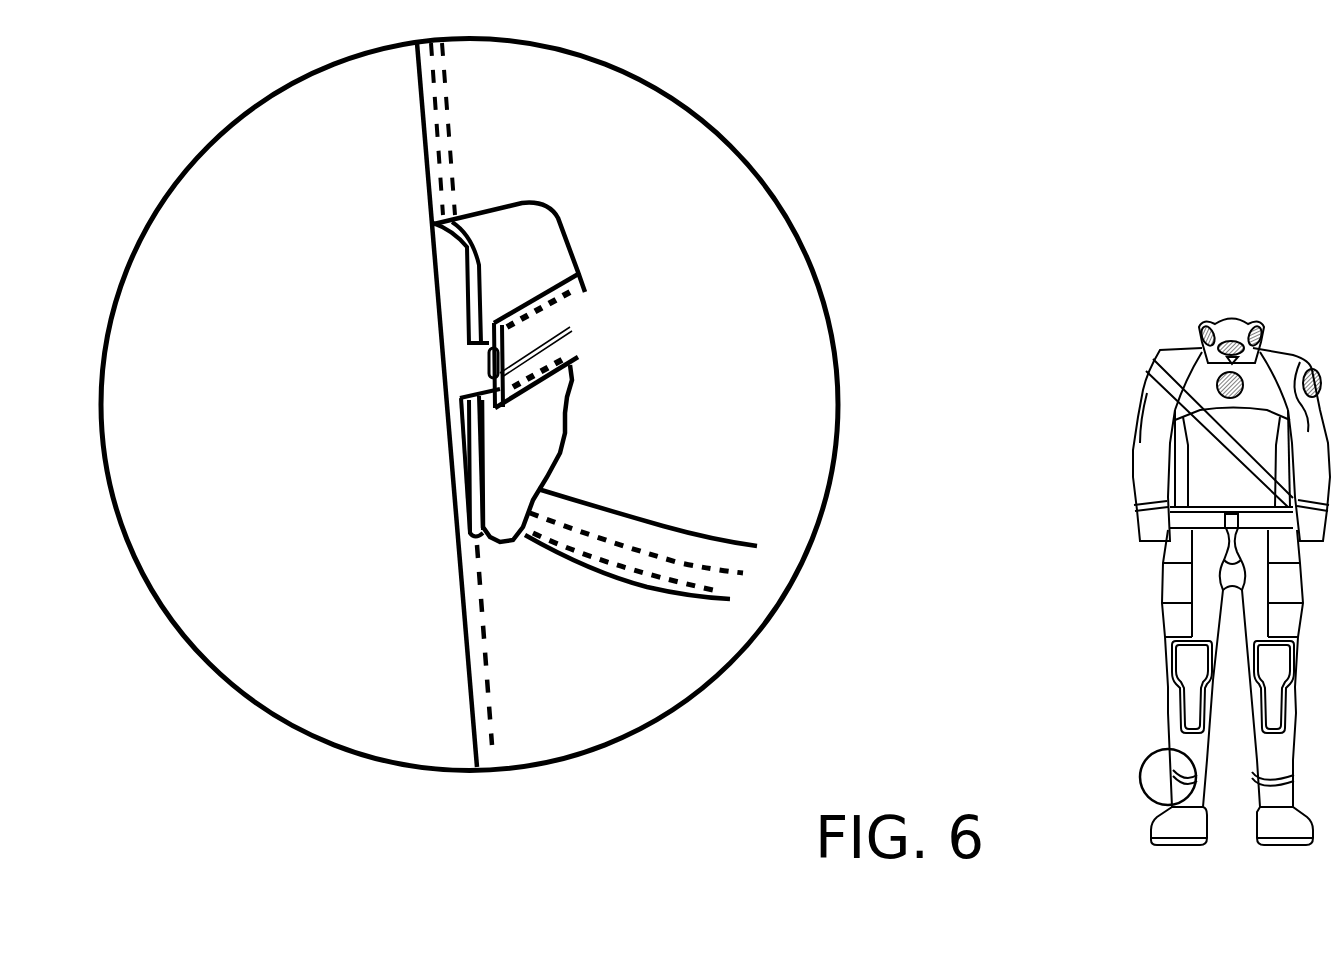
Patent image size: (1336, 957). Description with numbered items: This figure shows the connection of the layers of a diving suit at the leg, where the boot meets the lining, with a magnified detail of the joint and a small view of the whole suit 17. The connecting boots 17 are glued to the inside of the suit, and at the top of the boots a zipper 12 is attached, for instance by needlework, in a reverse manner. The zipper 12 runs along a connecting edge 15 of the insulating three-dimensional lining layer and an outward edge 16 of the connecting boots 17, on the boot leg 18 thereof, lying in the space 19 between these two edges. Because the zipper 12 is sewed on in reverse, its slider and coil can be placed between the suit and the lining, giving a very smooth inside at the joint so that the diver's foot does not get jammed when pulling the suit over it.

The zipper 12 is at (586, 313).
The connecting edge 15 is at (407, 268).
The outward edge 16 is at (413, 477).
The connecting boots 17 is at (676, 675).
The boot leg 18 is at (682, 640).
The space 19 is at (465, 362).